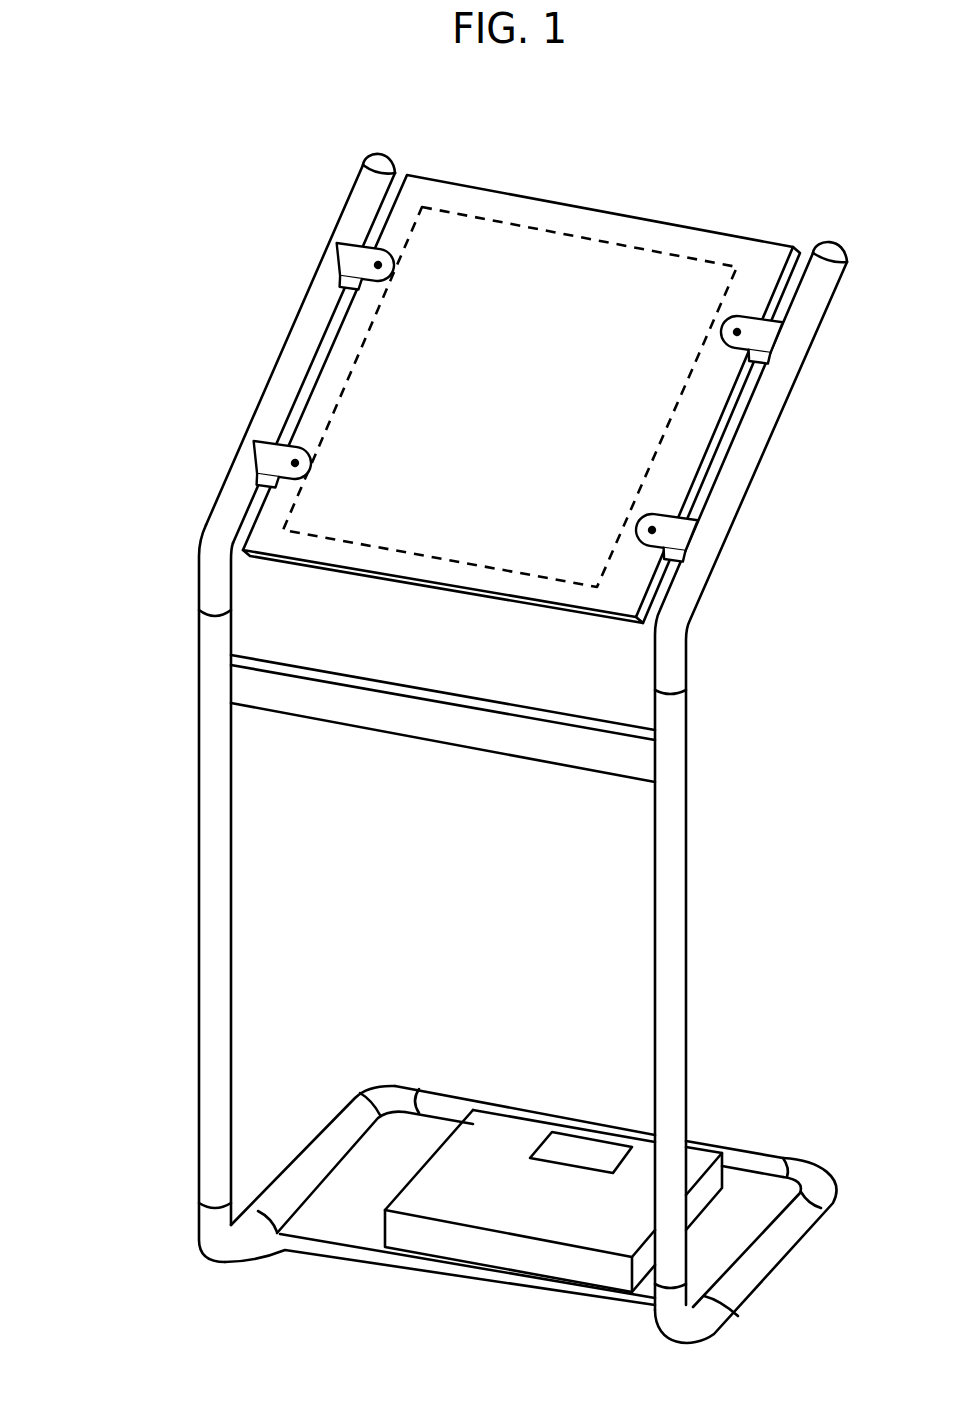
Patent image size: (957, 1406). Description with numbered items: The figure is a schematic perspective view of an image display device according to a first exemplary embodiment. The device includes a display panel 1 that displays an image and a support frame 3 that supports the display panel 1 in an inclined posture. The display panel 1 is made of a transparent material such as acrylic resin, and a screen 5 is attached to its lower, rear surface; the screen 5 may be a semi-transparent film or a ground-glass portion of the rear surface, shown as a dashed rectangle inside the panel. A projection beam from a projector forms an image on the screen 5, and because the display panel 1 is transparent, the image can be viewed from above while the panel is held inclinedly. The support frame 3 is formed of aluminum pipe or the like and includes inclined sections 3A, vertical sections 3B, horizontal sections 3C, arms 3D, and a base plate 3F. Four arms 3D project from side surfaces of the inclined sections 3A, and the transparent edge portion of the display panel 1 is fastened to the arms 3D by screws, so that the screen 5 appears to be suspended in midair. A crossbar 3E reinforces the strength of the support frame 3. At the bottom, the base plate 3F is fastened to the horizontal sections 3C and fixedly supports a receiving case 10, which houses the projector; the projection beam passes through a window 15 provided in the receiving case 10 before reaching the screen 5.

The display panel 1 is at (457, 197).
The screen 5 is at (572, 248).
The support frame 3 is at (295, 322).
The inclined sections 3A is at (273, 406).
The vertical sections 3B is at (207, 902).
The horizontal sections 3C is at (325, 1140).
The arms 3D is at (760, 340).
The crossbar 3E is at (552, 753).
The base plate 3F is at (737, 1245).
The receiving case 10 is at (487, 1143).
The window 15 is at (570, 1148).